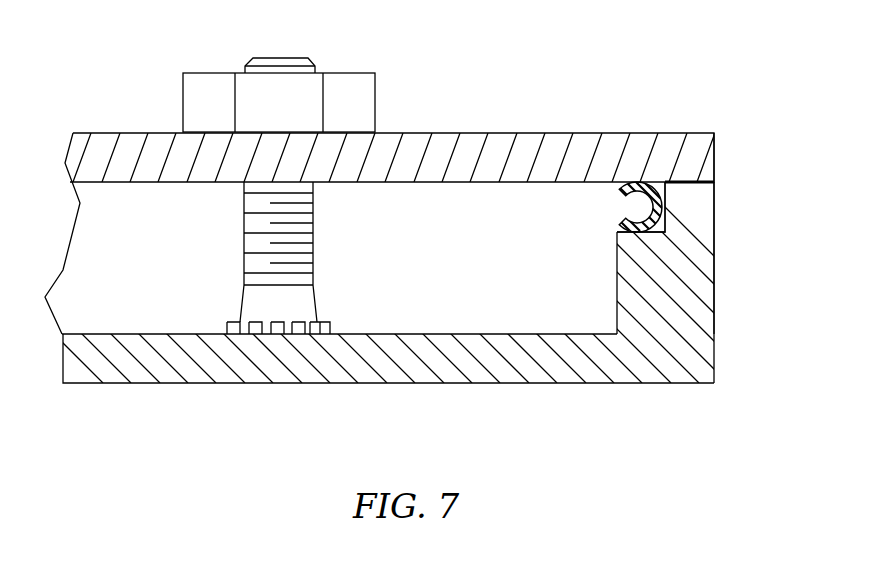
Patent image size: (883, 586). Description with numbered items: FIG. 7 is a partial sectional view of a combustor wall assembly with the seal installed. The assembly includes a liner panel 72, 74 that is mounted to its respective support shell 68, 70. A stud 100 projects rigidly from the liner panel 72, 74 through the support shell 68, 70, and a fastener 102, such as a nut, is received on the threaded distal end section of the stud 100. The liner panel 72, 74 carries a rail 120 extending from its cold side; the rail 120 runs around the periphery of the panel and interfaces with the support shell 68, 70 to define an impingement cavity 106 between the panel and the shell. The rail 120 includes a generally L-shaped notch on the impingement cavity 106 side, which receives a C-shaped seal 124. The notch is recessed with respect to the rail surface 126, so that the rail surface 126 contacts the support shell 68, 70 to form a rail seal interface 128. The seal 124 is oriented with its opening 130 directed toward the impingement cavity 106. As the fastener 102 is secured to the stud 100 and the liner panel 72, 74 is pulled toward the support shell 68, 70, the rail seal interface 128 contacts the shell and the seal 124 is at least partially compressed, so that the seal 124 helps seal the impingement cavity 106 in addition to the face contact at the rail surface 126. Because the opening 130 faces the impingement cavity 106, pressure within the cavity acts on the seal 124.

The support shell 68 is at (394, 176).
The support shell 70 is at (426, 97).
The liner panel 72 is at (420, 337).
The liner panel 74 is at (560, 418).
The stud 100 is at (248, 223).
The fastener 102 is at (193, 95).
The impingement cavity 106 is at (468, 282).
The rail 120 is at (705, 307).
The seal 124 is at (624, 184).
The rail surface 126 is at (688, 180).
The rail seal interface 128 is at (742, 196).
The opening 130 is at (611, 205).